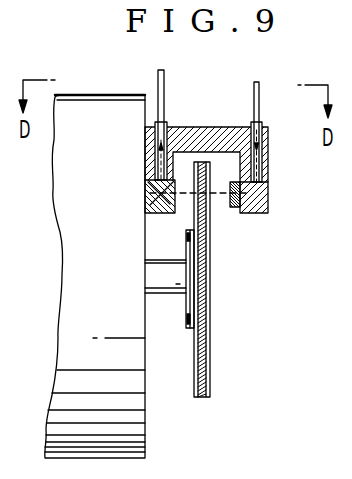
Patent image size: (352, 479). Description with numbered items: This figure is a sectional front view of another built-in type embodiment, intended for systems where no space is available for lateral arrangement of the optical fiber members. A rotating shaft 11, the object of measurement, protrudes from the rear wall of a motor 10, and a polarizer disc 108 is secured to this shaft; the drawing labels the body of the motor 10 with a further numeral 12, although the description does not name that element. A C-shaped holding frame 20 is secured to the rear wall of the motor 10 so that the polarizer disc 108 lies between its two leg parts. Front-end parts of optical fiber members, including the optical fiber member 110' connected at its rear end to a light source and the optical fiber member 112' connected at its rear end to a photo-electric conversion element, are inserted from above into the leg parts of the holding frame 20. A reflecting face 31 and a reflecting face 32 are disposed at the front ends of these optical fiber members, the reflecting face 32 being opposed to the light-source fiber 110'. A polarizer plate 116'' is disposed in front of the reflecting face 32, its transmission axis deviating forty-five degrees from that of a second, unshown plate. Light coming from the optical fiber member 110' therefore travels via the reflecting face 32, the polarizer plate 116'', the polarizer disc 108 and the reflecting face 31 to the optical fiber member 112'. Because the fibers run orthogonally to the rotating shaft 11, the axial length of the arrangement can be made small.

The motor 10 is at (95, 94).
The body / housing 12 is at (142, 94).
The holding frame 20 is at (207, 127).
The optical fiber member 112' is at (179, 125).
The optical fiber member 110' is at (279, 132).
The reflecting face 31 is at (158, 214).
The reflecting face 32 is at (268, 198).
The polarizer plate 116'' is at (234, 228).
The rotating shaft 11 is at (162, 294).
The polarizer disc 108 is at (212, 325).